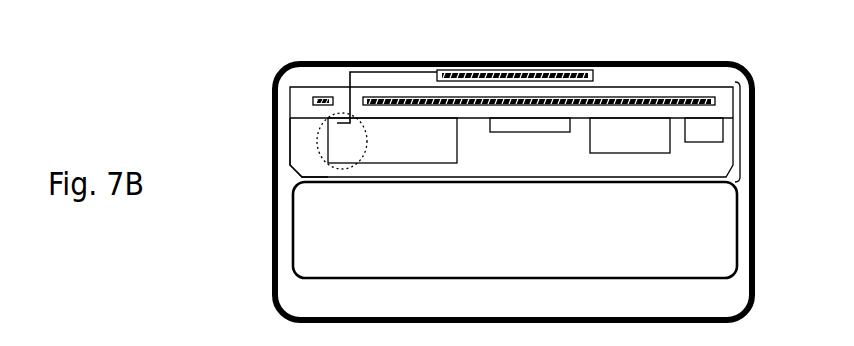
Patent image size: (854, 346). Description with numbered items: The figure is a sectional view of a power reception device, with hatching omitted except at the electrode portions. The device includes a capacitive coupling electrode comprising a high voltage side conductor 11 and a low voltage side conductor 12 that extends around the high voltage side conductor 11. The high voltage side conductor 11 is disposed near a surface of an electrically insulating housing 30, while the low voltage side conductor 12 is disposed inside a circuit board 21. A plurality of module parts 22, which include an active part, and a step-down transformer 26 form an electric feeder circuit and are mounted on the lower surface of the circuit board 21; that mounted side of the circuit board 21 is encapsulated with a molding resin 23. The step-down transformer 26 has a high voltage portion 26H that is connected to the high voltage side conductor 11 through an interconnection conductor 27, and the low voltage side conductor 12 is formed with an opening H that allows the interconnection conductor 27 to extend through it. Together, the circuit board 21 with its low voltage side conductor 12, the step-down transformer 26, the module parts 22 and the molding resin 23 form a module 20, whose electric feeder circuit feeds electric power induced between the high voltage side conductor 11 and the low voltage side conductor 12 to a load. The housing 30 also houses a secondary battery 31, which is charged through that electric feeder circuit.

The high voltage side conductor 11 is at (522, 70).
The low voltage side conductor 12 is at (633, 98).
The module 20 is at (749, 120).
The circuit board 21 is at (298, 102).
The module parts 22 is at (533, 132).
The molding resin 23 is at (298, 148).
The step-down transformer 26 is at (448, 152).
The high voltage portion 26H is at (323, 156).
The interconnection conductor 27 is at (338, 84).
The housing 30 is at (757, 187).
The secondary battery 31 is at (728, 230).
The opening H is at (288, 64).